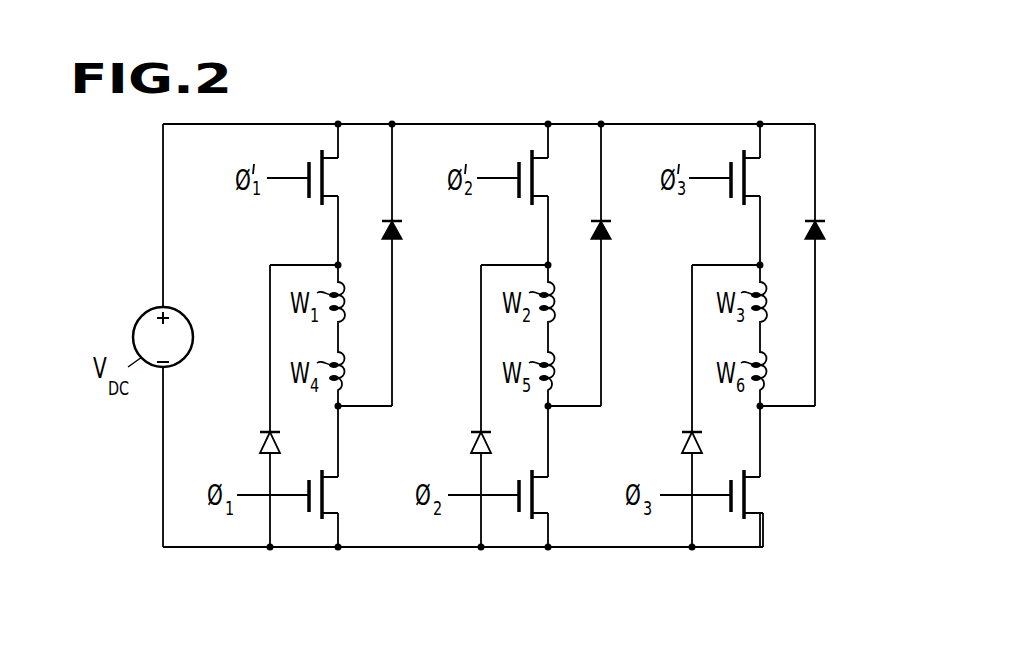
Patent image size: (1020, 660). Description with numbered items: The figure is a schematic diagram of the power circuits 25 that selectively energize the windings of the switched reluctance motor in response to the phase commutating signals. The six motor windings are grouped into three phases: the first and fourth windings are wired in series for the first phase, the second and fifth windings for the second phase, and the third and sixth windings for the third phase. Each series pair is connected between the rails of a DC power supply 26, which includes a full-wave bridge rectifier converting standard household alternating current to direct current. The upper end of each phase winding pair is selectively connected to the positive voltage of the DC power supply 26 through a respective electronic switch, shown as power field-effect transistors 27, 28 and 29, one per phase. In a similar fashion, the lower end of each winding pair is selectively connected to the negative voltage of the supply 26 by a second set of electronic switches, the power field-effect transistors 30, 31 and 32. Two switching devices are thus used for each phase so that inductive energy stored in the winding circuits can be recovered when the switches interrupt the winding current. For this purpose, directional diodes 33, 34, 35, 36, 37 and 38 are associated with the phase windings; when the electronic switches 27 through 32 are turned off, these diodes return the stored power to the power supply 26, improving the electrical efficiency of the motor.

The inverter circuit 25 is at (802, 108).
The DC power supply 26 is at (185, 308).
The power field-effect transistor 27 is at (325, 178).
The power field-effect transistor 28 is at (535, 178).
The power field-effect transistor 29 is at (747, 178).
The power field-effect transistor 30 is at (326, 496).
The power field-effect transistor 31 is at (536, 496).
The power field-effect transistor 32 is at (748, 496).
The directional diode 33 is at (401, 232).
The directional diode 34 is at (610, 232).
The directional diode 35 is at (824, 232).
The directional diode 36 is at (262, 443).
The directional diode 37 is at (473, 442).
The directional diode 38 is at (684, 442).